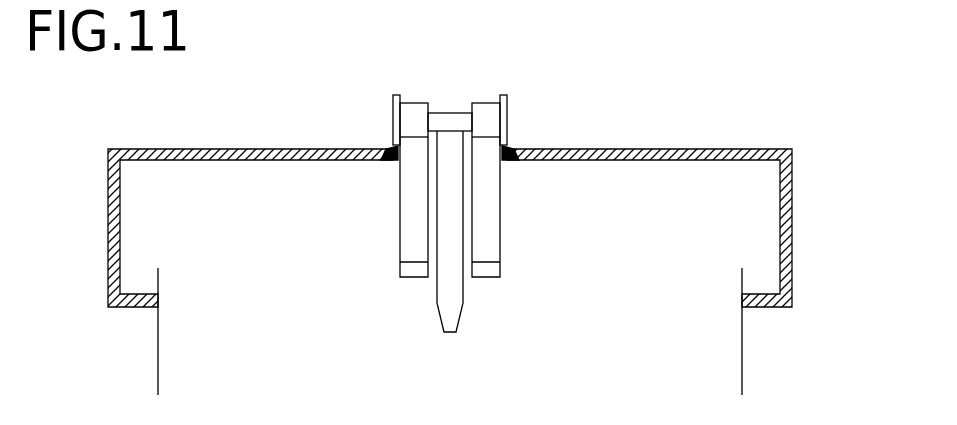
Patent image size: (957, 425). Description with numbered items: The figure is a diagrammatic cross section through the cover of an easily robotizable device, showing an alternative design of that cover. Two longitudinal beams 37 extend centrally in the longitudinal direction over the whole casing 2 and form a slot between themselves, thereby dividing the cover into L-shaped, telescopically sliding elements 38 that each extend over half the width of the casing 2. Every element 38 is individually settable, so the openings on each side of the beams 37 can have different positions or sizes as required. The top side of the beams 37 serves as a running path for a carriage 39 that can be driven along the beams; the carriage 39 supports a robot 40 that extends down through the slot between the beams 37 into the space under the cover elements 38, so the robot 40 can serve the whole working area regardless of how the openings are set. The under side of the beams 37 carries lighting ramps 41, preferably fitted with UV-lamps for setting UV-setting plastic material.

The casing 2 is at (158, 344).
The longitudinal beam 37 is at (417, 159).
The L-shaped cover element 38 is at (255, 150).
The carriage 39 is at (414, 103).
The robot 40 is at (450, 310).
The lighting ramp 41 is at (413, 270).